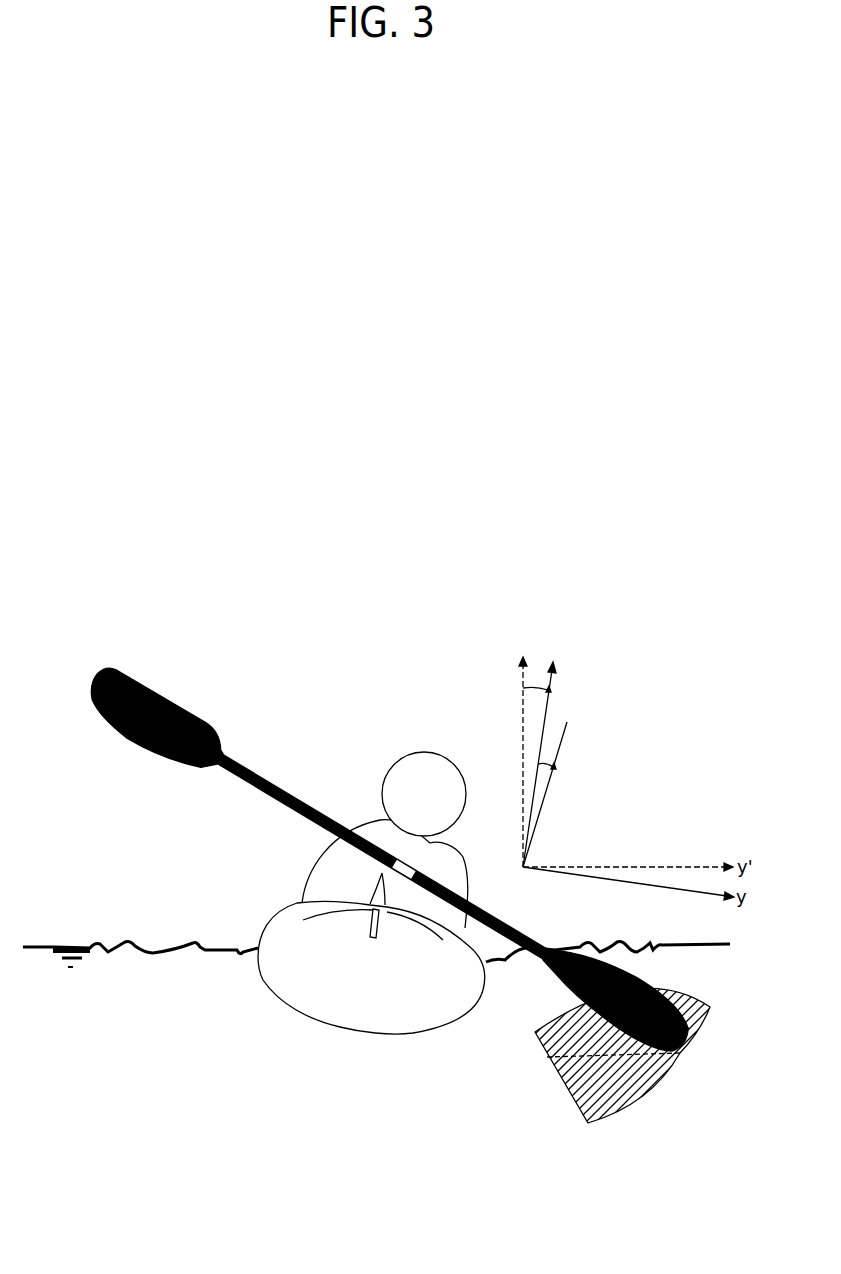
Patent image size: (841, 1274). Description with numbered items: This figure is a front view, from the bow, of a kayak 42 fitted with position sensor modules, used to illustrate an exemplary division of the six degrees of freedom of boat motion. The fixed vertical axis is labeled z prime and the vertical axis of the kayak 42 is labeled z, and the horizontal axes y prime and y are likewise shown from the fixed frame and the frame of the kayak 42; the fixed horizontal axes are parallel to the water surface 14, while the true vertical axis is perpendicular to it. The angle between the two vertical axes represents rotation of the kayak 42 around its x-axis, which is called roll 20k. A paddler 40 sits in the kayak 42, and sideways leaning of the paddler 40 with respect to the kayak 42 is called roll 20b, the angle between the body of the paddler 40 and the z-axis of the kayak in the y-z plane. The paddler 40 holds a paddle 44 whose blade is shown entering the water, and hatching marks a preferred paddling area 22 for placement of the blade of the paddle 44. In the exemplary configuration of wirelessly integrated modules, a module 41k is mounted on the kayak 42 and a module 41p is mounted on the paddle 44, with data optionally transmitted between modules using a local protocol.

The water surface 14 is at (83, 958).
The roll 20k is at (548, 690).
The roll 20b is at (553, 763).
The preferred paddling area 22 is at (680, 1053).
The paddler 40 is at (312, 887).
The module 41p is at (423, 877).
The module 41k is at (378, 912).
The kayak 42 is at (483, 995).
The paddle 44 is at (98, 673).